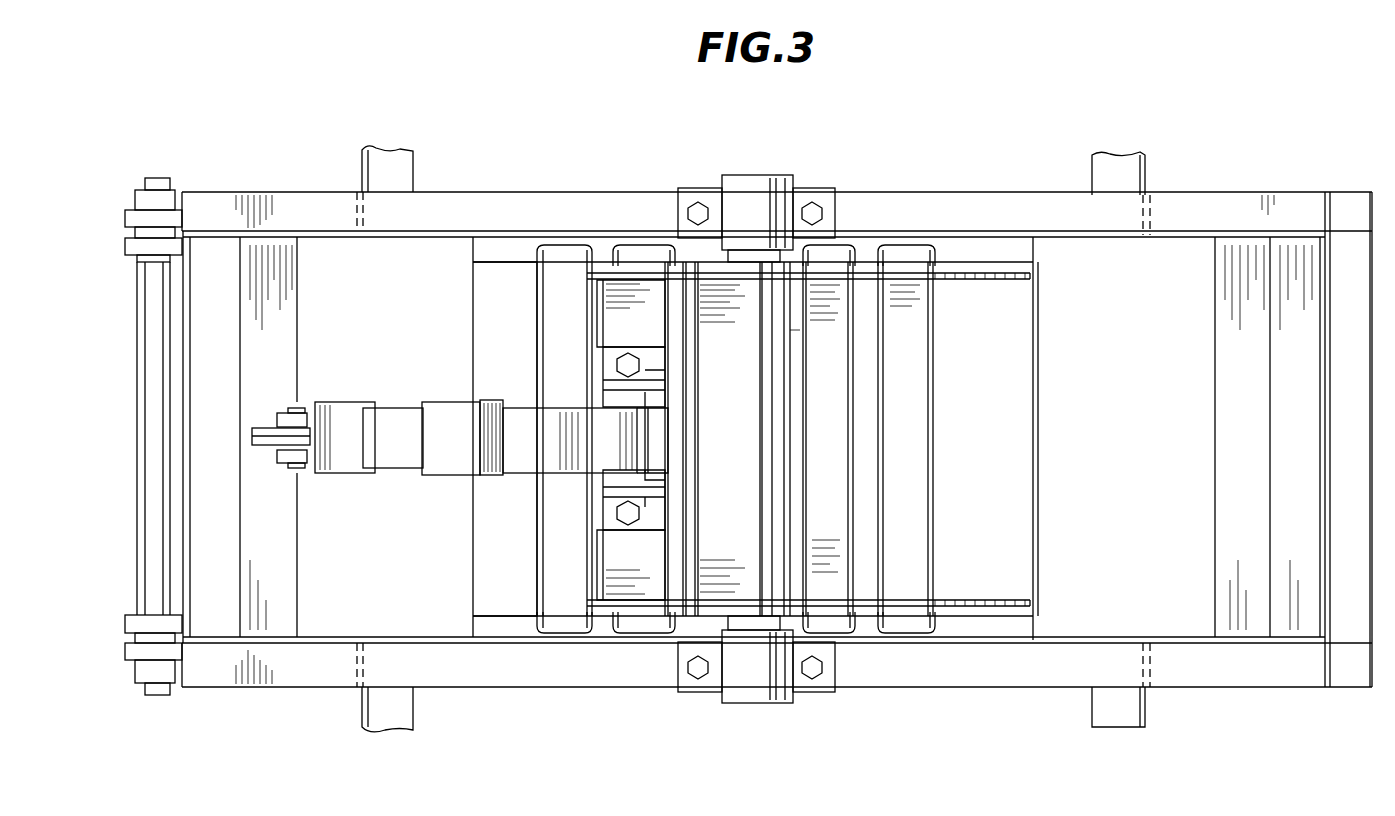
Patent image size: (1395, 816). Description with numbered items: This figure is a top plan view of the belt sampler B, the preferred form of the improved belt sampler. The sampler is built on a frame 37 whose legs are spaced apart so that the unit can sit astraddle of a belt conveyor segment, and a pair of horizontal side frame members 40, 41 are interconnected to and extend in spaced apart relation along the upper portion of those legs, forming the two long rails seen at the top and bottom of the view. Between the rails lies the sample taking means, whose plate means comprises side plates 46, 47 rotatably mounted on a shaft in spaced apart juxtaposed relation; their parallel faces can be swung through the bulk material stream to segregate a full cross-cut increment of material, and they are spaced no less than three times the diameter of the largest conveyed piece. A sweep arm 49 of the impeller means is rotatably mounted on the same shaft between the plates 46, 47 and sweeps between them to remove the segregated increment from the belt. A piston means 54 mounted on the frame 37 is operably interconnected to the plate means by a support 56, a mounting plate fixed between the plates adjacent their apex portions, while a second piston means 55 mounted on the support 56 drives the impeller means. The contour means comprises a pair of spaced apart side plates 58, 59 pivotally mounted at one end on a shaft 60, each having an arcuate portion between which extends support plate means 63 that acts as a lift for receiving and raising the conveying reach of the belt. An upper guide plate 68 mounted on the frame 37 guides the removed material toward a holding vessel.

The frame 37 is at (1290, 172).
The horizontal side frame member 40 is at (1017, 203).
The horizontal side frame member 41 is at (312, 675).
The side plate 46 is at (996, 572).
The side plate 47 is at (963, 283).
The sweep arm 49 is at (705, 557).
The piston means 54 is at (390, 417).
The piston means 55 is at (552, 448).
The support 56 is at (673, 320).
The side plate 58 is at (528, 265).
The side plate 59 is at (515, 583).
The shaft 60 is at (157, 180).
The support plate means 63 is at (895, 255).
The upper guide plate 68 is at (458, 350).
The belt sampler B is at (571, 156).